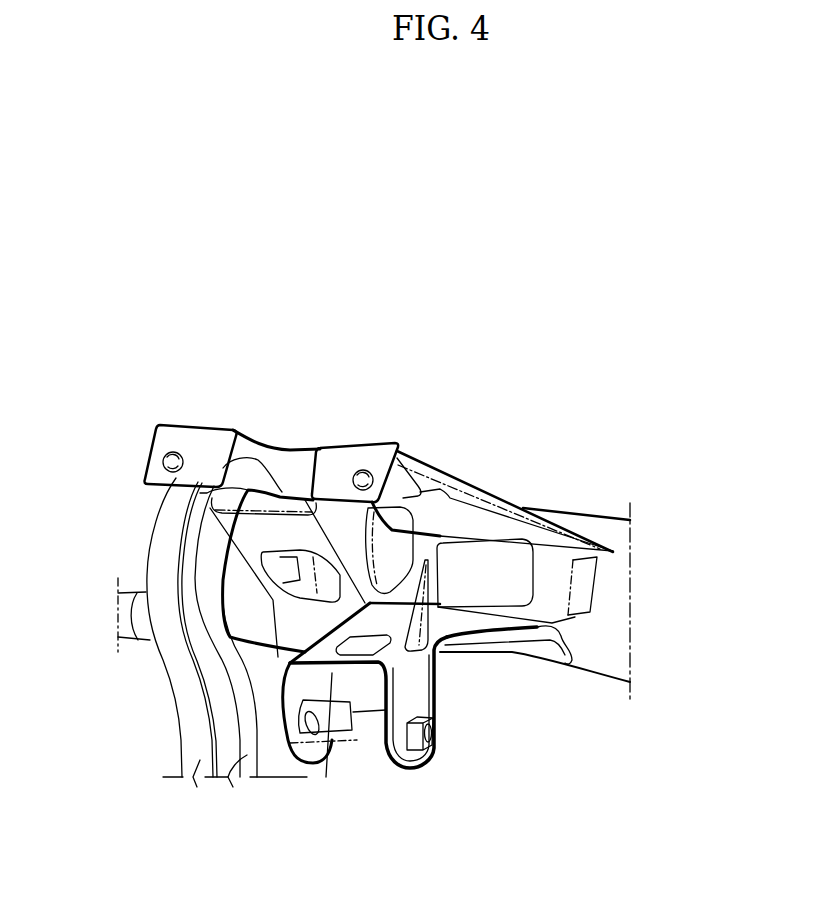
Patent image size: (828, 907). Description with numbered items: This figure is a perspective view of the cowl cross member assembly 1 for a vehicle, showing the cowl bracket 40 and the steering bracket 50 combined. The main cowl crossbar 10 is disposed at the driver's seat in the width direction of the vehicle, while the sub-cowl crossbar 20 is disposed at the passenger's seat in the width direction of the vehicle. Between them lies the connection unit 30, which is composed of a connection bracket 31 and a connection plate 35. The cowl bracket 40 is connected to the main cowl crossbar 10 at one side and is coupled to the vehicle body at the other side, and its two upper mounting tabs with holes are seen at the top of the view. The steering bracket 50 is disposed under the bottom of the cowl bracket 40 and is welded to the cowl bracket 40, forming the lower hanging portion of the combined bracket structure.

The mounting structure 1 is at (433, 283).
The main cowl crossbar 10 is at (608, 598).
The sub-cowl crossbar 20 is at (125, 637).
The connection unit 30 is at (227, 676).
The connection bracket 31 is at (199, 775).
The connection plate 35 is at (229, 775).
The cowl bracket 40 is at (280, 600).
The steering bracket 50 is at (455, 642).